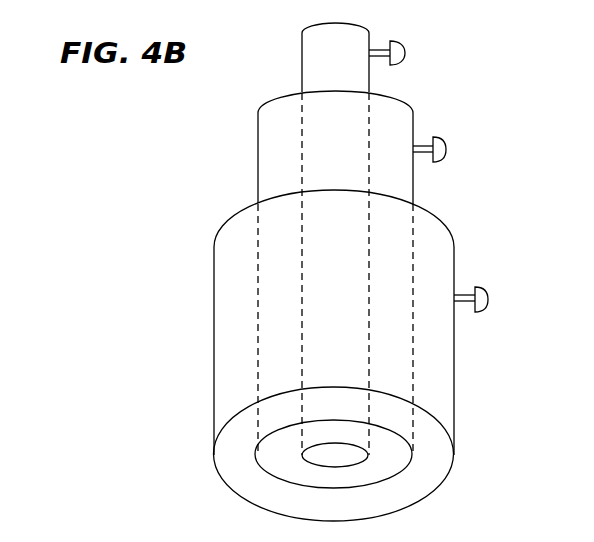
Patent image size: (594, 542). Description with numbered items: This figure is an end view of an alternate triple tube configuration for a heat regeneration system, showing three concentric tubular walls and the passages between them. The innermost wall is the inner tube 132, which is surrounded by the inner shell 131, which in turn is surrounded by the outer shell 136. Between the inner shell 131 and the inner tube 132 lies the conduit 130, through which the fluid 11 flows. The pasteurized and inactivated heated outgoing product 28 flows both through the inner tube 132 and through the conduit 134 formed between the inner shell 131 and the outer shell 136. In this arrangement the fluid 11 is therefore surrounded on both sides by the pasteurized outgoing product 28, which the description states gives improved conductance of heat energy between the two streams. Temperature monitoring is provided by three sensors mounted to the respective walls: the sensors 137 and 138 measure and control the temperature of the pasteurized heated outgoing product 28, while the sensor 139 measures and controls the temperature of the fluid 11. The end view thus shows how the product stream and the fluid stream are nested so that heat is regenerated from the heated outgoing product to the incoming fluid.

The pasteurized heated outgoing product 28 is at (365, 15).
The fluid 11 is at (256, 102).
The conduit 130 is at (278, 170).
The inner shell 131 is at (258, 140).
The inner tube 132 is at (362, 77).
The conduit 134 is at (227, 259).
The outer shell 136 is at (215, 306).
The sensor 137 is at (405, 53).
The sensor 138 is at (487, 298).
The sensor 139 is at (445, 149).